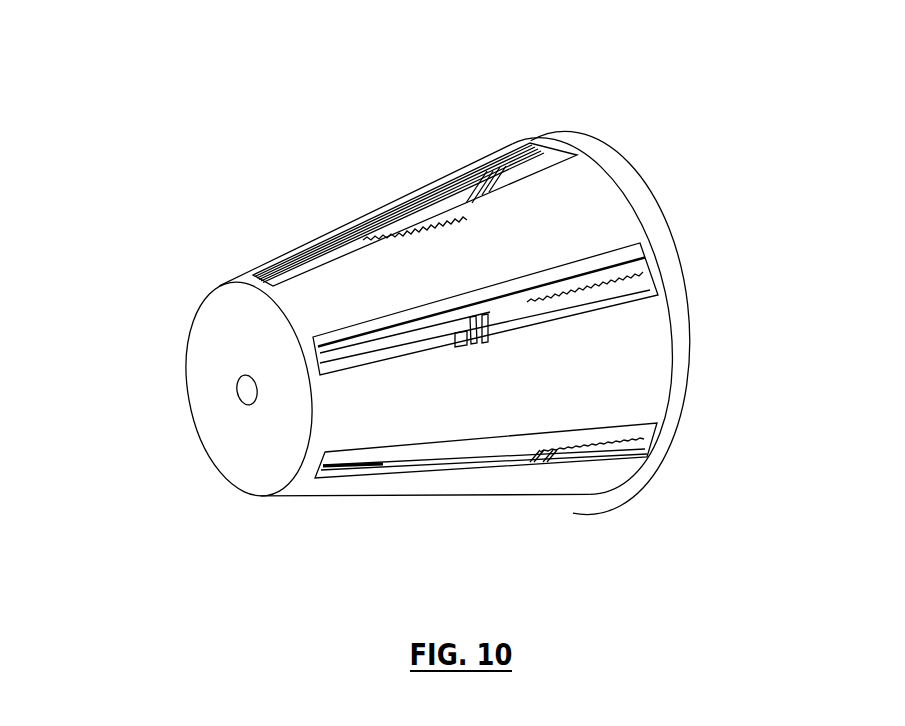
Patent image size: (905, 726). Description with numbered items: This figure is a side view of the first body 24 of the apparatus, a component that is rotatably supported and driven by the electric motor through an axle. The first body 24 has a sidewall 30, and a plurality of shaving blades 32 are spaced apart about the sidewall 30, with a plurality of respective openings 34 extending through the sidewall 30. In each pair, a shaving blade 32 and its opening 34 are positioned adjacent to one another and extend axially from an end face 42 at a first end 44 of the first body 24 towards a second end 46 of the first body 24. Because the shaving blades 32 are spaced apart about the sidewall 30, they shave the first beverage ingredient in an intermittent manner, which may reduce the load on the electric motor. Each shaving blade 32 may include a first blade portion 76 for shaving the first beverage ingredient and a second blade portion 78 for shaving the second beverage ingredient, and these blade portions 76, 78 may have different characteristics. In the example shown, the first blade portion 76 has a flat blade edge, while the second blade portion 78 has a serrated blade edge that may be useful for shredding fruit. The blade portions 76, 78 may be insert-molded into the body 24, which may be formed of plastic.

The first body 24 is at (265, 194).
The sidewall 30 is at (596, 189).
The shaving blades 32 is at (497, 158).
The openings 34 is at (542, 150).
The end face 42 is at (203, 330).
The first end 44 is at (176, 384).
The second end 46 is at (700, 352).
The first blade portion 76 is at (428, 323).
The second blade portion 78 is at (642, 278).